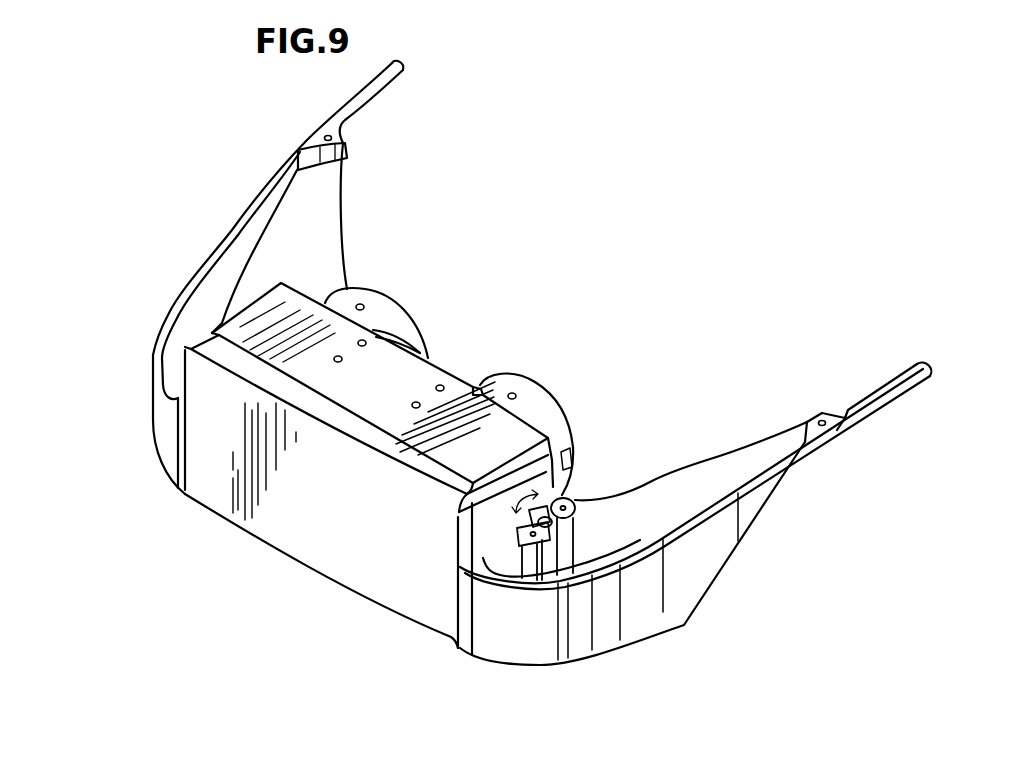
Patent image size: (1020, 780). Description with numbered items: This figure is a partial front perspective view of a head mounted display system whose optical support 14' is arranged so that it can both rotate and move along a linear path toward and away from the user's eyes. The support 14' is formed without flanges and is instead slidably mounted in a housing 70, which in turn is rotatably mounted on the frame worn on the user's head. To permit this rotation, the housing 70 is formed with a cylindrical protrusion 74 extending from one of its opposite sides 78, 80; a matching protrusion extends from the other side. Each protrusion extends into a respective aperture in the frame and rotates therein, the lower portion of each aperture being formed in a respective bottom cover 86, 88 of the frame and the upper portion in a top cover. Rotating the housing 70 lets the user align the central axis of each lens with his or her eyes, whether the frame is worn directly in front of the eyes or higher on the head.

The housing 70 is at (297, 540).
The side of the housing 78 is at (243, 310).
The bottom cover 86 is at (167, 467).
The support 14' is at (454, 391).
The side of the housing 80 is at (541, 470).
The cylindrical protrusion 74 is at (577, 495).
The bottom cover 88 is at (520, 647).